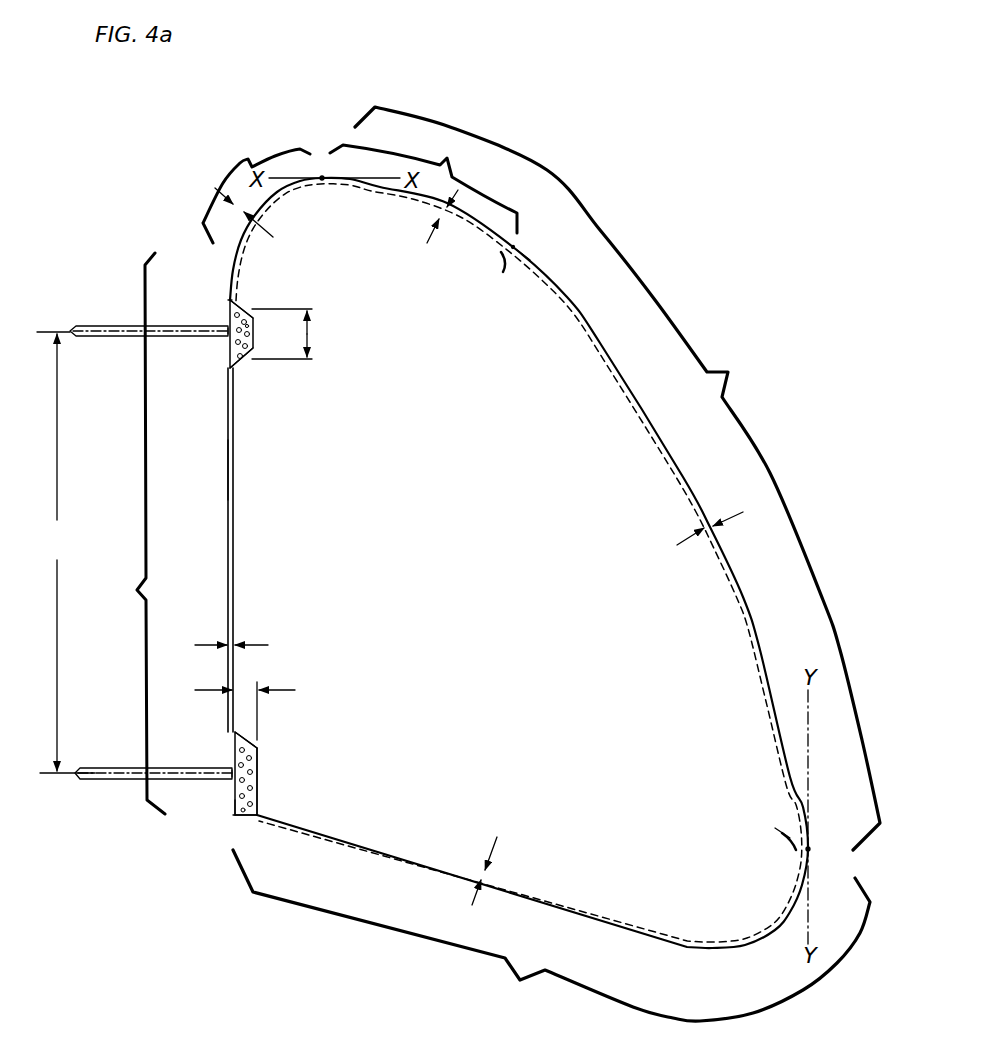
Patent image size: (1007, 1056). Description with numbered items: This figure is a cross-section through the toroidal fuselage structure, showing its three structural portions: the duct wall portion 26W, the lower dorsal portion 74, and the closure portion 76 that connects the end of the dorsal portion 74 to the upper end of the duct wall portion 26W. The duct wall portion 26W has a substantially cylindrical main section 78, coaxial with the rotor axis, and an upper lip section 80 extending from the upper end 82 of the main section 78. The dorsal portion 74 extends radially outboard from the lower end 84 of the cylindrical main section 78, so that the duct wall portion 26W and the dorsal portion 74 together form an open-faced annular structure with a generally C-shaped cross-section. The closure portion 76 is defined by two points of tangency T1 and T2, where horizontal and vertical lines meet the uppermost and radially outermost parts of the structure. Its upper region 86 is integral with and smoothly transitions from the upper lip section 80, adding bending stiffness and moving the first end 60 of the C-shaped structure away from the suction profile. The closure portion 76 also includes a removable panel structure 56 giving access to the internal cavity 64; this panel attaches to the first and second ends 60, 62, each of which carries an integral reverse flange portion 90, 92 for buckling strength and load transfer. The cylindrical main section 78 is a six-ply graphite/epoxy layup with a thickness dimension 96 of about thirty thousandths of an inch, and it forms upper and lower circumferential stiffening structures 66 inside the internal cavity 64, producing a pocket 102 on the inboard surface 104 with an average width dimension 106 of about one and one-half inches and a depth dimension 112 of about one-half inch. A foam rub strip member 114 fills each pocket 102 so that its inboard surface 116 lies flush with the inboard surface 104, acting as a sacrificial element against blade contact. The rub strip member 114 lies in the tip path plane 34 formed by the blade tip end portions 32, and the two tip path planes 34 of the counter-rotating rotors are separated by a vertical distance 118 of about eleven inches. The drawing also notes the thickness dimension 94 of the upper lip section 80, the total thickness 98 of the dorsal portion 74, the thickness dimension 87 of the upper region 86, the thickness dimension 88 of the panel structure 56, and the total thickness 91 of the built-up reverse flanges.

The duct wall portion 26W is at (234, 535).
The blade tip end portions 32 is at (229, 333).
The tip path plane 34 is at (43, 330).
The removable panel structure 56 is at (600, 343).
The first end 60 is at (515, 246).
The second end 62 is at (820, 842).
The internal cavity 64 is at (482, 627).
The circumferential stiffening structures 66 is at (255, 335).
The lower dorsal portion 74 is at (551, 935).
The closure portion 76 is at (617, 478).
The cylindrical main section 78 is at (132, 533).
The upper lip section 80 is at (250, 191).
The upper end 82 is at (231, 297).
The lower end 84 is at (233, 816).
The upper region 86 is at (450, 156).
The thickness dimension 87 is at (427, 228).
The thickness dimension 88 is at (694, 535).
The reverse flange portion 90 is at (526, 255).
The total thickness 91 is at (492, 263).
The reverse flange portion 92 is at (783, 828).
The thickness dimension 94 is at (259, 221).
The thickness dimension 96 is at (245, 645).
The total thickness 98 is at (493, 858).
The pocket 102 is at (268, 755).
The inboard surface 104 is at (227, 470).
The width dimension 106 is at (312, 336).
The depth dimension 112 is at (264, 709).
The rub strip member 114 is at (234, 355).
The inboard surface 116 is at (227, 312).
The vertical distance 118 is at (65, 552).
The point of tangency T1 is at (322, 177).
The point of tangency T2 is at (810, 850).